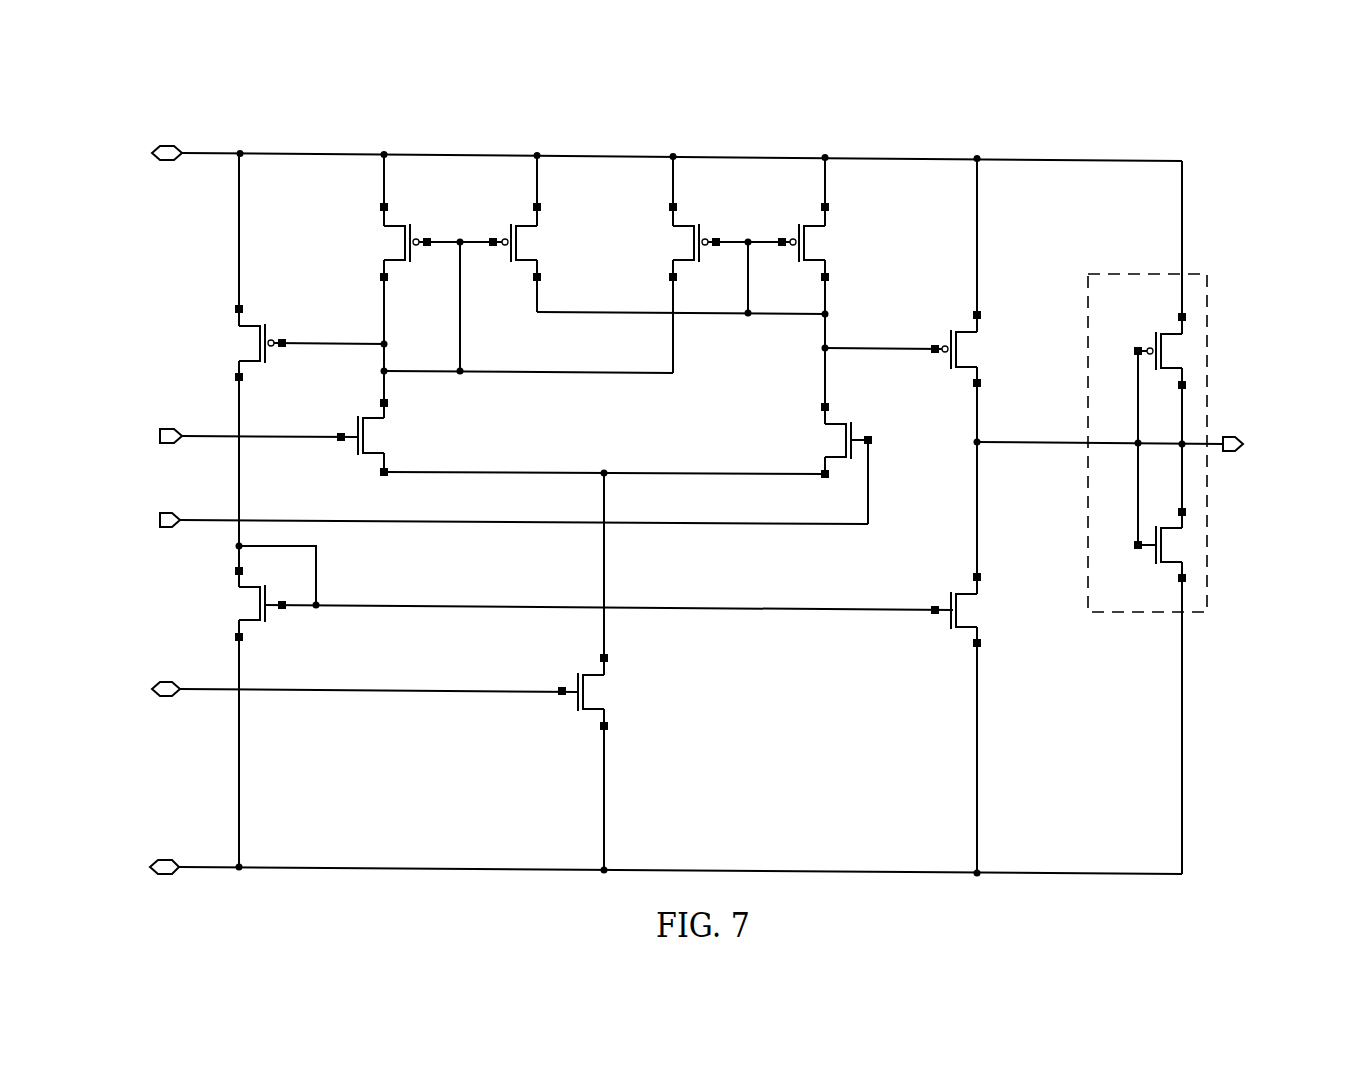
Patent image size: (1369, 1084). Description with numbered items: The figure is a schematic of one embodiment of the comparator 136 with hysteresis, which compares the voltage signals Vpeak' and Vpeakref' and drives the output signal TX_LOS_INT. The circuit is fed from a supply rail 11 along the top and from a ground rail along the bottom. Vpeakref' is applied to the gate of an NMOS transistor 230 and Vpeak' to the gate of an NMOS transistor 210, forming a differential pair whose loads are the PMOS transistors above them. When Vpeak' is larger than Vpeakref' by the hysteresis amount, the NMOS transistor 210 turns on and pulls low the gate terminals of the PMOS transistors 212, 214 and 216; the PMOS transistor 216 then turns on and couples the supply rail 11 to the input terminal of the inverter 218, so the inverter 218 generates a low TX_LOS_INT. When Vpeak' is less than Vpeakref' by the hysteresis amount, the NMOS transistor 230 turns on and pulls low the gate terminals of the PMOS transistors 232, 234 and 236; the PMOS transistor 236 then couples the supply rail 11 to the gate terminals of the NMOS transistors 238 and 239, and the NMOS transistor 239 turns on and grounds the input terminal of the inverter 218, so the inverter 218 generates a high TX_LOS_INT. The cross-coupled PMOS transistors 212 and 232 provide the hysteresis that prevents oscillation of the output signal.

The comparator with hysteresis 136 is at (157, 97).
The supply rail 11 is at (214, 151).
The PMOS transistor 234 is at (380, 238).
The PMOS transistor 232 is at (547, 250).
The PMOS transistor 212 is at (666, 240).
The PMOS transistor 214 is at (833, 244).
The PMOS transistor 236 is at (235, 340).
The PMOS transistor 216 is at (987, 344).
The NMOS transistor 230 is at (393, 440).
The NMOS transistor 210 is at (818, 440).
The NMOS transistor 238 is at (235, 603).
The NMOS transistor 239 is at (993, 606).
The inverter 218 is at (1207, 301).